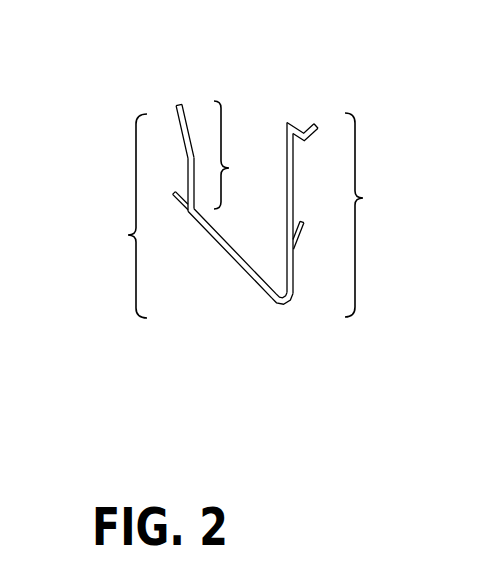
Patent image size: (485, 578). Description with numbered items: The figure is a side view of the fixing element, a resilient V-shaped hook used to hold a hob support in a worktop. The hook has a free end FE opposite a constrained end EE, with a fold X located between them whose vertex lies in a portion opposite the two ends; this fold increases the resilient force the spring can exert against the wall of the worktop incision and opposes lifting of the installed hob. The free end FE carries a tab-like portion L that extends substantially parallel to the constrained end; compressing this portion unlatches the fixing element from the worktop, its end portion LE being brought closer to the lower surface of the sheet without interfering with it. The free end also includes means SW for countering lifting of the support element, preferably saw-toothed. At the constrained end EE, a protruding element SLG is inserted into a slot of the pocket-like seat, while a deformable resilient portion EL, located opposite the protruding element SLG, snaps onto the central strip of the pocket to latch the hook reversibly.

The end portion of the tab-like portion LE is at (192, 94).
The tab-like portion L is at (219, 156).
The free end FE is at (185, 216).
The means for countering lifting SW is at (178, 205).
The fold X is at (280, 303).
The constrained end EE is at (343, 215).
The deformable resilient portion EL is at (309, 122).
The protruding element SLG is at (301, 236).